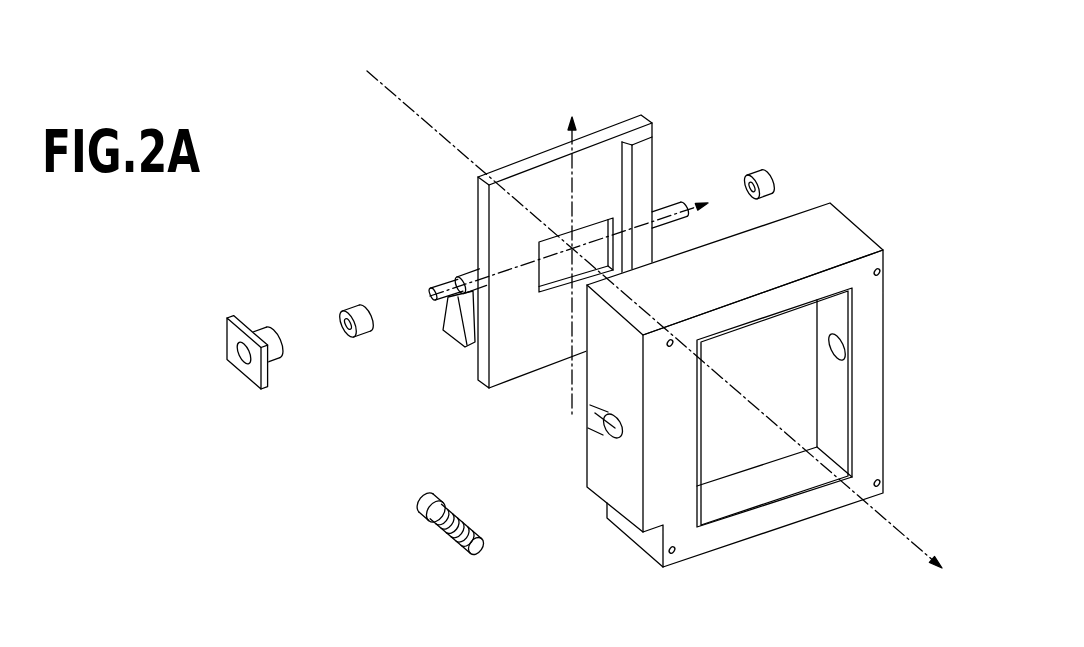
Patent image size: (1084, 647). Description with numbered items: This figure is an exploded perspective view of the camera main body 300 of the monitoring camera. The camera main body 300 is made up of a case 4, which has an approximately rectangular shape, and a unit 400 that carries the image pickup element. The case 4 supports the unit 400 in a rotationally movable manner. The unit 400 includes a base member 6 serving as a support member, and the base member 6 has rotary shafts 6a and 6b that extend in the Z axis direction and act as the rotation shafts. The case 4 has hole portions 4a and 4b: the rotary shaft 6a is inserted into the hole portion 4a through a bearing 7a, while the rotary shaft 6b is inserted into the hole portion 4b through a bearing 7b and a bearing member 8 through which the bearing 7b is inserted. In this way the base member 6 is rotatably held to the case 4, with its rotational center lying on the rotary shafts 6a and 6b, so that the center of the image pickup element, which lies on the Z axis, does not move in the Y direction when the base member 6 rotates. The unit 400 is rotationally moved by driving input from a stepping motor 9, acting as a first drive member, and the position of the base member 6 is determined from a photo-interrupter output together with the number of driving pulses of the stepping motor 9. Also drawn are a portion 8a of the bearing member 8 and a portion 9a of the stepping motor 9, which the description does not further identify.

The camera main body 300 is at (216, 37).
The unit 400 is at (642, 68).
The case 4 is at (836, 232).
The hole portion 4a is at (846, 355).
The hole portion 4b is at (606, 436).
The base member 6 is at (510, 171).
The rotary shaft 6a is at (667, 207).
The rotary shaft 6b is at (444, 301).
The bearing 7a is at (762, 172).
The bearing 7b is at (364, 305).
The bearing member 8 is at (238, 336).
The hole 8a is at (248, 377).
The stepping motor 9 is at (443, 544).
The threaded portion 9a is at (468, 521).